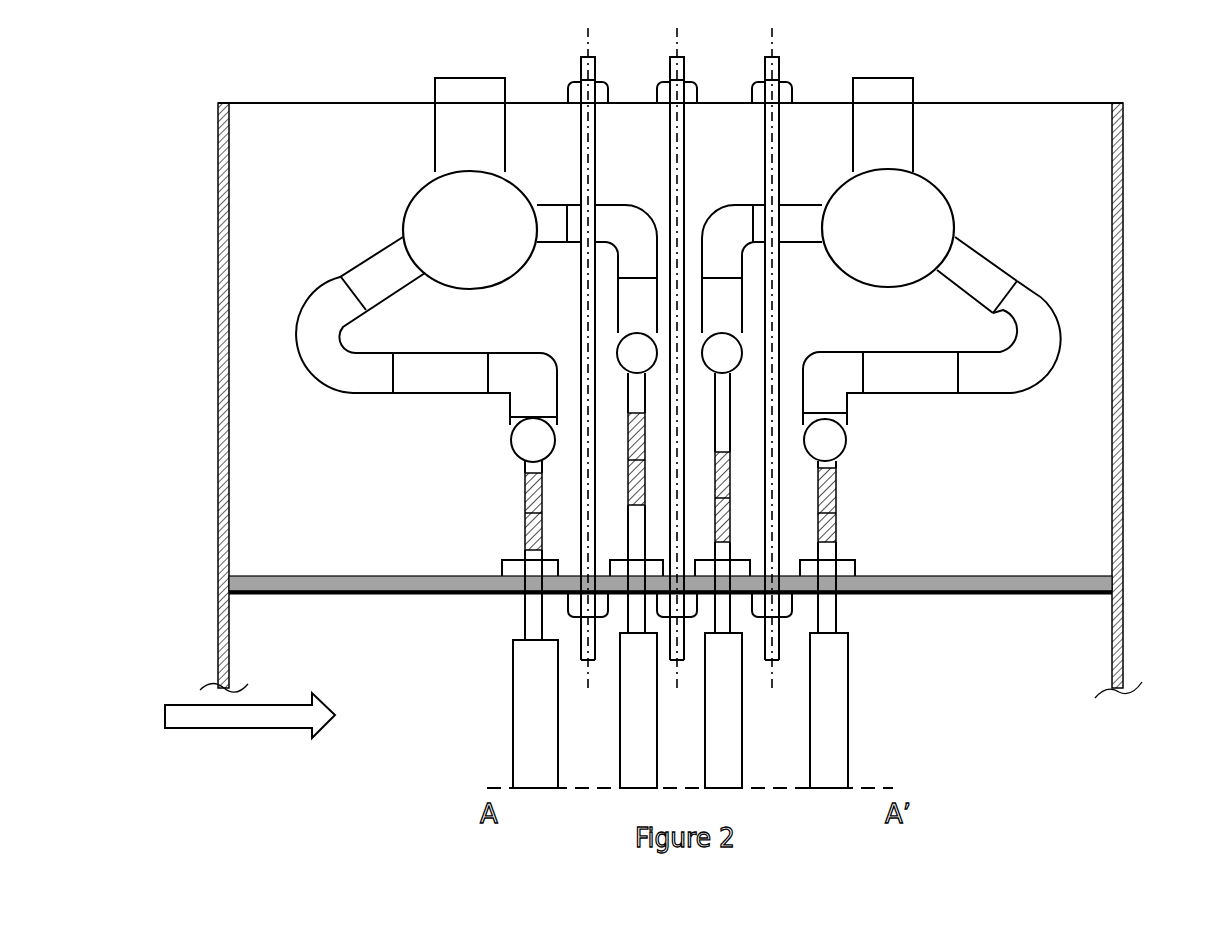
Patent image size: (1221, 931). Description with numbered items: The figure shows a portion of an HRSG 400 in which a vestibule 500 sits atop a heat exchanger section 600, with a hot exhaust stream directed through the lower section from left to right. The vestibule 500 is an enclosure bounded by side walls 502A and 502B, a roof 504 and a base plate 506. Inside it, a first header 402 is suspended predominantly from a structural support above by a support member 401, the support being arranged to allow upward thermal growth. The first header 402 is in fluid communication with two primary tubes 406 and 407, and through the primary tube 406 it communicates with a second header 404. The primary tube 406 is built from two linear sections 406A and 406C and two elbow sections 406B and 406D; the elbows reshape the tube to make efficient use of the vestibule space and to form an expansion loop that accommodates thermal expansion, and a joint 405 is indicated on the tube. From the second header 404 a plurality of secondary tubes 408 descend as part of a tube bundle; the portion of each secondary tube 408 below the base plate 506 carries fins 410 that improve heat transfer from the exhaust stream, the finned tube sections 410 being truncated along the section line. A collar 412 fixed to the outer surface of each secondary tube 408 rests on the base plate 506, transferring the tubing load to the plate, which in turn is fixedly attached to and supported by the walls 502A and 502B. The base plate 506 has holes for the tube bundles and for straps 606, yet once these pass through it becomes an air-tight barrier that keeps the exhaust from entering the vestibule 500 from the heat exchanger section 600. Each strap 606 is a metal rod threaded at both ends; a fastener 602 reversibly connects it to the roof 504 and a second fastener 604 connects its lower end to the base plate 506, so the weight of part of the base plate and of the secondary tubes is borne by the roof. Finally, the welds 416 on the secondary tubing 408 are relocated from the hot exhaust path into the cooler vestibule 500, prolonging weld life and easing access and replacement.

The HRSG 400 is at (174, 548).
The support member 401 is at (898, 89).
The first header 402 is at (919, 186).
The second header 404 is at (833, 449).
The conduit joint 405 is at (998, 293).
The primary tube 406 is at (955, 336).
The linear section 406A is at (970, 250).
The elbow section 406B is at (1040, 374).
The linear section 406C is at (947, 387).
The elbow section 406D is at (853, 335).
The primary tube 407 is at (790, 206).
The secondary tube 408 is at (826, 472).
The fins 410 is at (835, 647).
The collar 412 is at (846, 562).
The welds 416 is at (838, 523).
The vestibule 500 is at (375, 500).
The side wall 502A is at (1123, 184).
The side wall 502B is at (229, 184).
The roof 504 is at (1064, 103).
The base plate 506 is at (987, 595).
The heat exchanger section 600 is at (388, 662).
The fastener 602 is at (789, 90).
The second fastener 604 is at (790, 618).
The strap 606 is at (767, 120).